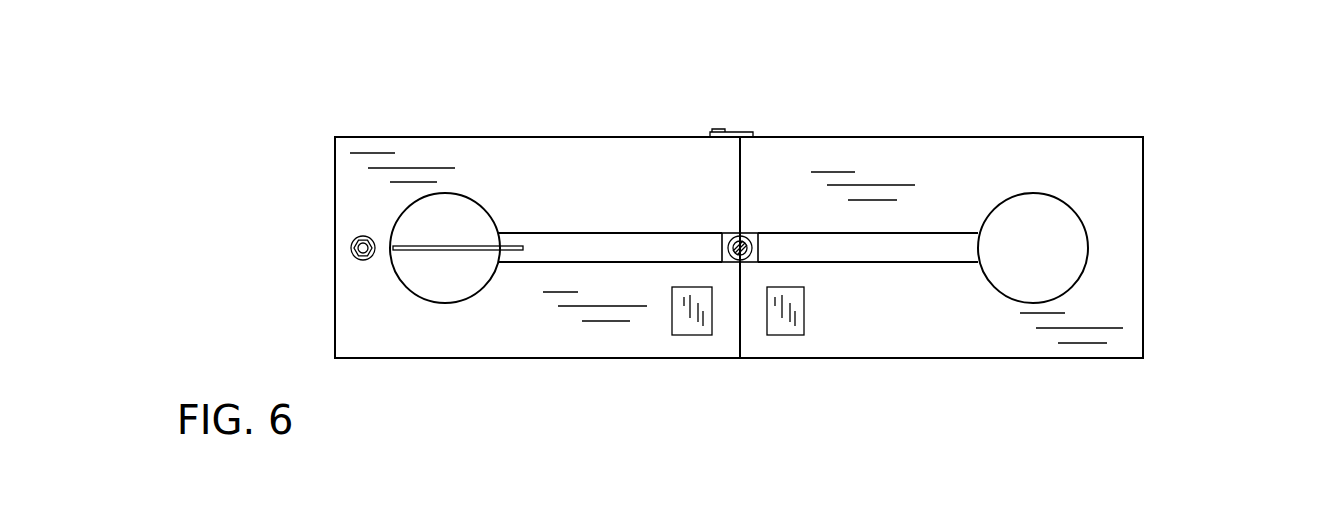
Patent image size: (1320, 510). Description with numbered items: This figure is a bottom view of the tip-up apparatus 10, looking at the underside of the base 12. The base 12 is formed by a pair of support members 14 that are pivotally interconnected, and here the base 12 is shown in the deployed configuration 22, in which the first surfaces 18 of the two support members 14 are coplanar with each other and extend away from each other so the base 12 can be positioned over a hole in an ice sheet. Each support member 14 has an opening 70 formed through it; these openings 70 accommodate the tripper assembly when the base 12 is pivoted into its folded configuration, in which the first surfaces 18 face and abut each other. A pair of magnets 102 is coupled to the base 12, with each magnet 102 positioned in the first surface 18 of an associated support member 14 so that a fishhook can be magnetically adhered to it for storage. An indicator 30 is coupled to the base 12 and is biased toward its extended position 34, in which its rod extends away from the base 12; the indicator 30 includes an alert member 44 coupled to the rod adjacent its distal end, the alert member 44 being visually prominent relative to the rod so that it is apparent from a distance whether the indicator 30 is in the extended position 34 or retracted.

The tip-up apparatus 10 is at (1120, 98).
The base 12 is at (598, 108).
The support members 14 is at (955, 167).
The first surface 18 is at (482, 335).
The deployed configuration 22 is at (1176, 313).
The indicator 30 is at (442, 214).
The extended position 34 is at (427, 283).
The alert member 44 is at (473, 248).
The opening 70 is at (590, 262).
The magnets 102 is at (690, 322).